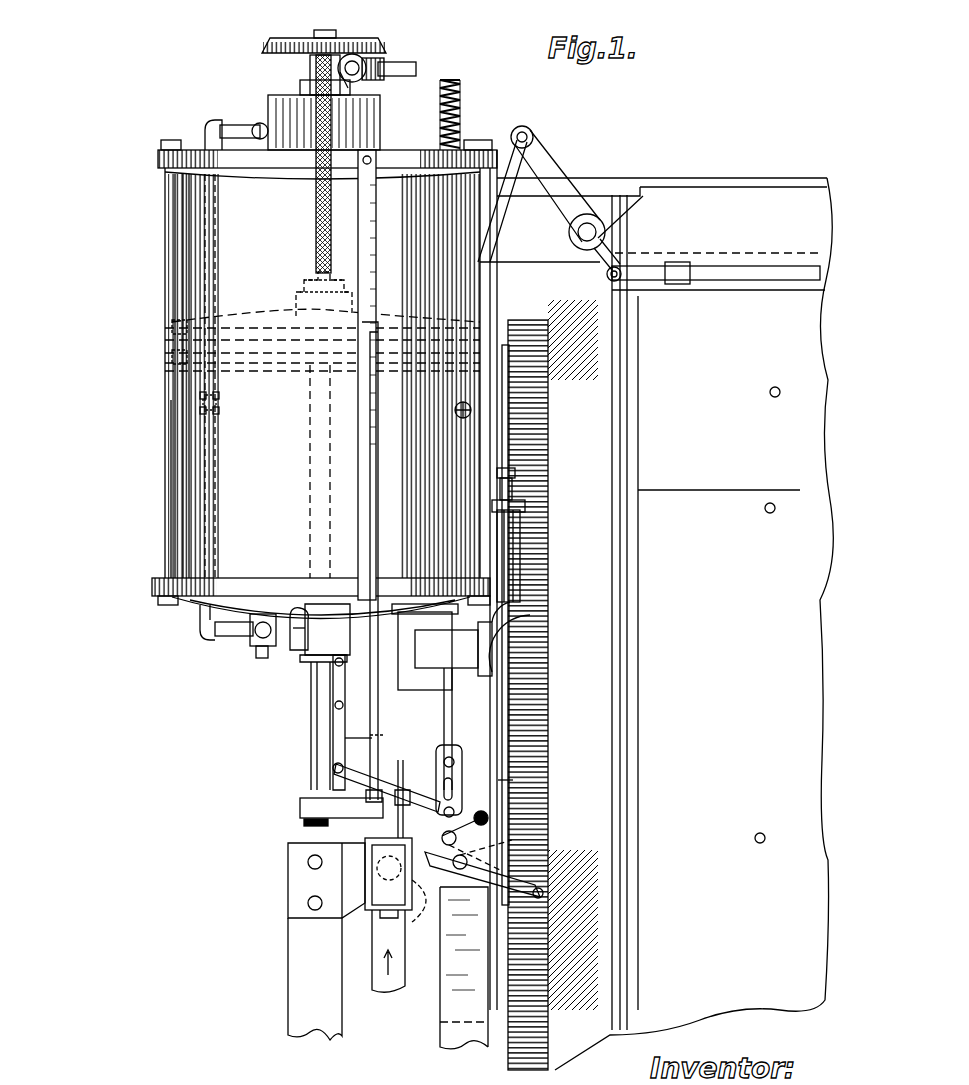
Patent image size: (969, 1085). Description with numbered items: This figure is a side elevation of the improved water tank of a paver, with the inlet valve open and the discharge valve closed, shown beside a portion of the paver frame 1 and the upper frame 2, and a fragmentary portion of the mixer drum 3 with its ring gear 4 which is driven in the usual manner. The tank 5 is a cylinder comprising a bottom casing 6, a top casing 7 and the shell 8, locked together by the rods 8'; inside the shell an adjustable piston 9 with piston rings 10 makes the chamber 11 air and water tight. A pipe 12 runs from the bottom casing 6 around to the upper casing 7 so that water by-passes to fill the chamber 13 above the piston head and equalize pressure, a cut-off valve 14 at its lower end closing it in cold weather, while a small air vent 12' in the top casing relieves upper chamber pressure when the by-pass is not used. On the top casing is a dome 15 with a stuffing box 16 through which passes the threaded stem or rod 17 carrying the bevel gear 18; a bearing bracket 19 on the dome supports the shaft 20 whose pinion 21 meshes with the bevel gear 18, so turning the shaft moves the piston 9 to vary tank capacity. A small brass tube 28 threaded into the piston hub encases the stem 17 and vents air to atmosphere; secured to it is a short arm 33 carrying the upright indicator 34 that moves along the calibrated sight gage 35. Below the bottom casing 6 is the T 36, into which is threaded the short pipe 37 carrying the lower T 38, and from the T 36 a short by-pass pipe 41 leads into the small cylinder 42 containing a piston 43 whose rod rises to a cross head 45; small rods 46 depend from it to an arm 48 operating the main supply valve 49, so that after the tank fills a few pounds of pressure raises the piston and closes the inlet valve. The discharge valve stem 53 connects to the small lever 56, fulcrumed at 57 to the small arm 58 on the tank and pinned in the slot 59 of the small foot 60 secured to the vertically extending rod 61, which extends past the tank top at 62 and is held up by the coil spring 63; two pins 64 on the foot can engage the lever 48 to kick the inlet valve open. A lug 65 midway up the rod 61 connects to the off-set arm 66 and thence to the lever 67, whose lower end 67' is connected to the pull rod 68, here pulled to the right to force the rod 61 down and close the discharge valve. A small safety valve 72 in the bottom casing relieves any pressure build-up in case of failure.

The paver frame 1 is at (288, 810).
The upper frame 2 is at (694, 192).
The mixer drum 3 is at (694, 624).
The ring gear 4 is at (522, 338).
The tank 5 is at (322, 373).
The bottom casing 6 is at (152, 590).
The top casing 7 is at (165, 158).
The shell 8 is at (151, 376).
The rods 8' is at (140, 489).
The adjustable piston 9 is at (235, 322).
The piston rings 10 is at (172, 352).
The chamber 11 is at (190, 440).
The pipe 12 is at (202, 628).
The air vent 12' is at (236, 120).
The chamber 13 is at (192, 228).
The cut-off valve 14 is at (262, 652).
The dome 15 is at (360, 130).
The stuffing box 16 is at (310, 80).
The stem or rod 17 is at (316, 222).
The bevel gear 18 is at (286, 40).
The bearing bracket 19 is at (356, 55).
The shaft 20 is at (398, 70).
The pinion 21 is at (370, 84).
The brass tube 28 is at (308, 512).
The short arm 33 is at (300, 820).
The upright indicator 34 is at (376, 324).
The calibrated sight gage 35 is at (372, 186).
The T 36 is at (446, 704).
The short pipe 37 is at (350, 822).
The T 38 is at (368, 888).
The by-pass pipe 41 is at (458, 652).
The small cylinder 42 is at (522, 572).
The piston 43 is at (492, 610).
The cross head 45 is at (515, 484).
The small rods 46 is at (530, 714).
The arm 48 is at (500, 870).
The main supply valve 49 is at (418, 912).
The stem 53 is at (345, 738).
The small lever 56 is at (340, 782).
The fulcrum 57 is at (333, 766).
The small arm 58 is at (336, 722).
The slot 59 is at (452, 784).
The small foot 60 is at (456, 812).
The vertically extending rod 61 is at (440, 732).
The upper end of rod 62 is at (462, 84).
The coil spring 63 is at (462, 118).
The pins 64 is at (458, 840).
The lug 65 is at (470, 412).
The off-set arm 66 is at (495, 230).
The lever 67 is at (561, 190).
The lower end of lever 67' is at (629, 249).
The pull rod 68 is at (734, 280).
The safety valve 72 is at (300, 606).